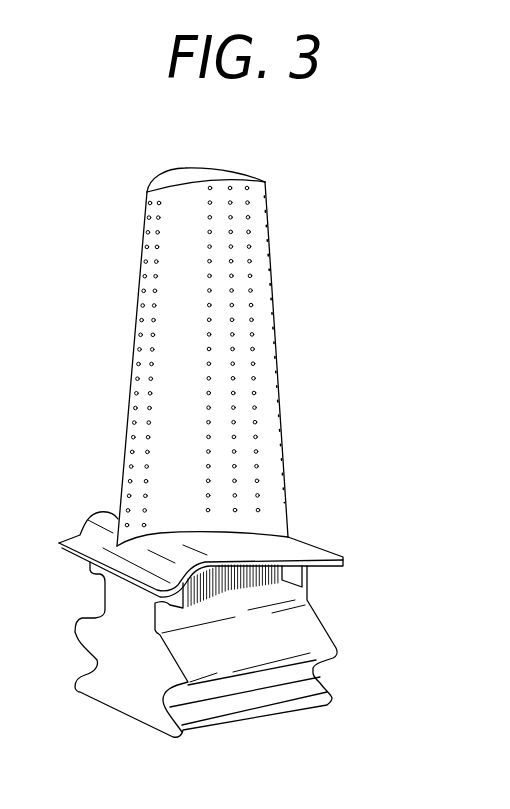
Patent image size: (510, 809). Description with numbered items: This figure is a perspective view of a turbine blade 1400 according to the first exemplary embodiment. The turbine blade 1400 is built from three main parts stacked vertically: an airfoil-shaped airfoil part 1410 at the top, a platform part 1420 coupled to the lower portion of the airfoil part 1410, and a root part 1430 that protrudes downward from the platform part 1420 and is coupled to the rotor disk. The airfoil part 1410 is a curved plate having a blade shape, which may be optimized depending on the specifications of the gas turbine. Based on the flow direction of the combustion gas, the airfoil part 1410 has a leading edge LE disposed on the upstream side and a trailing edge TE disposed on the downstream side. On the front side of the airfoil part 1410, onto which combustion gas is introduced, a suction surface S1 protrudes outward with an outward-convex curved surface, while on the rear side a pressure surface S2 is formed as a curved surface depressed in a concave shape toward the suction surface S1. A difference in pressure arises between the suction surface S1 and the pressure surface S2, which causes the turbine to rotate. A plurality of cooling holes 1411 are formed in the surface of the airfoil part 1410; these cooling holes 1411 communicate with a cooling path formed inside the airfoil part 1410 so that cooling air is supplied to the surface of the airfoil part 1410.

The turbine blade 1400 is at (152, 149).
The airfoil part 1410 is at (173, 455).
The cooling holes 1411 is at (248, 255).
The platform part 1420 is at (313, 540).
The root part 1430 is at (308, 633).
The suction surface S1 is at (237, 172).
The pressure surface S2 is at (173, 322).
The leading edge LE is at (128, 402).
The trailing edge TE is at (282, 413).